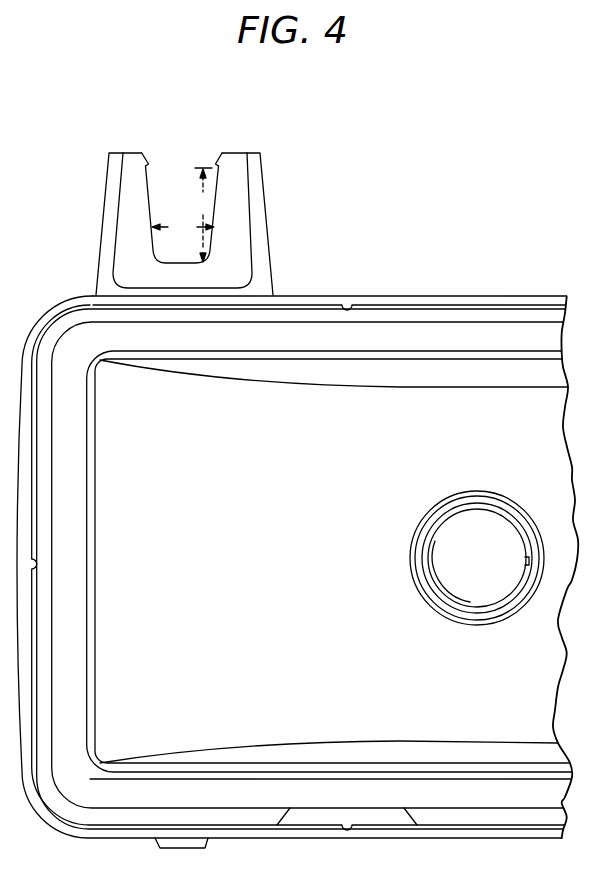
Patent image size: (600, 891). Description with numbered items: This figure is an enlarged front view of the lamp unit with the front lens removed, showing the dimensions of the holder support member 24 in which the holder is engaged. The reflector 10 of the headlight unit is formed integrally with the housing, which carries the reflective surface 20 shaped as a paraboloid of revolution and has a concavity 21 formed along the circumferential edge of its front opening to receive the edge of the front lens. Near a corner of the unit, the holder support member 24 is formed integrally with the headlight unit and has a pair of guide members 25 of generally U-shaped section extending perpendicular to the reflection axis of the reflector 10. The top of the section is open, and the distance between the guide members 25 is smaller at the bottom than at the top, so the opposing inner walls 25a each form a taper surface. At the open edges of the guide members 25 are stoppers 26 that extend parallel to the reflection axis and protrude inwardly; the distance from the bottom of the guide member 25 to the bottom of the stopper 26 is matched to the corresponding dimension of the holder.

The reflector 10 is at (452, 296).
The reflective surface 20 is at (377, 398).
The concavity 21 is at (510, 333).
The holder support member 24 is at (108, 227).
The guide member 25 is at (128, 180).
The inner wall 25a is at (163, 250).
The stopper 26 is at (150, 162).